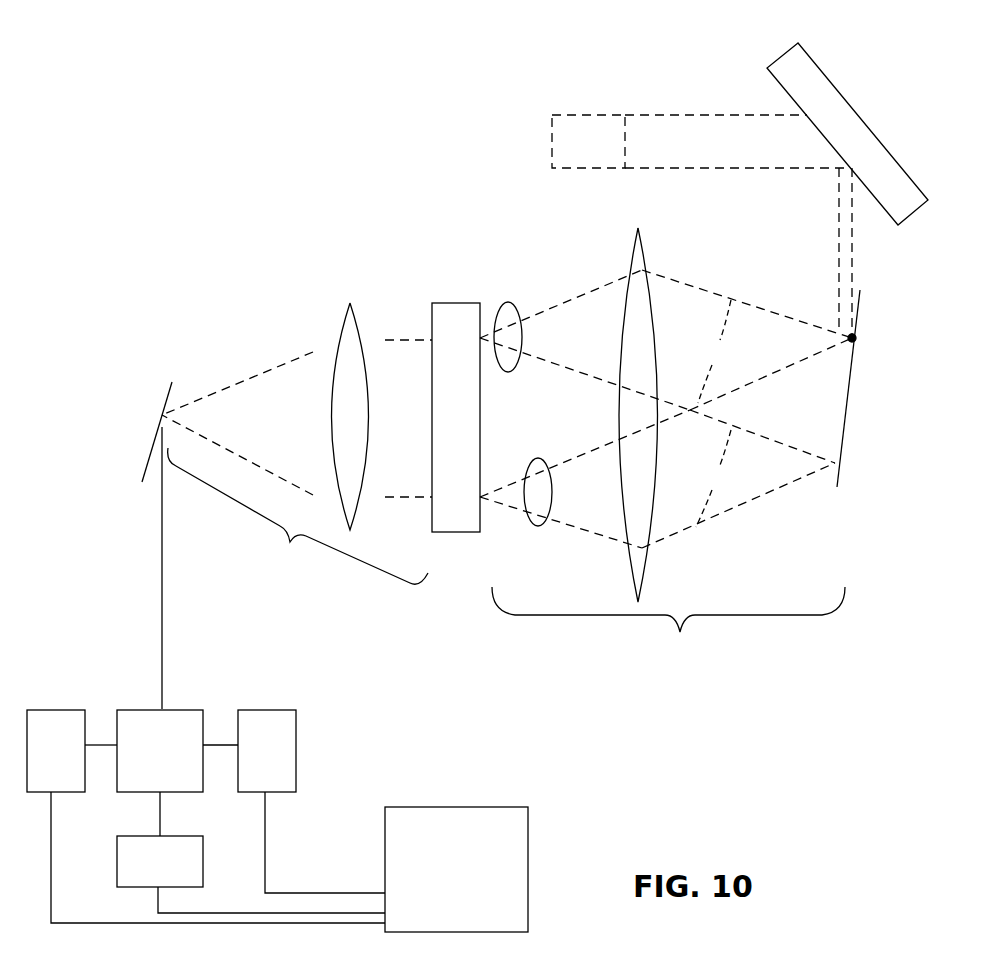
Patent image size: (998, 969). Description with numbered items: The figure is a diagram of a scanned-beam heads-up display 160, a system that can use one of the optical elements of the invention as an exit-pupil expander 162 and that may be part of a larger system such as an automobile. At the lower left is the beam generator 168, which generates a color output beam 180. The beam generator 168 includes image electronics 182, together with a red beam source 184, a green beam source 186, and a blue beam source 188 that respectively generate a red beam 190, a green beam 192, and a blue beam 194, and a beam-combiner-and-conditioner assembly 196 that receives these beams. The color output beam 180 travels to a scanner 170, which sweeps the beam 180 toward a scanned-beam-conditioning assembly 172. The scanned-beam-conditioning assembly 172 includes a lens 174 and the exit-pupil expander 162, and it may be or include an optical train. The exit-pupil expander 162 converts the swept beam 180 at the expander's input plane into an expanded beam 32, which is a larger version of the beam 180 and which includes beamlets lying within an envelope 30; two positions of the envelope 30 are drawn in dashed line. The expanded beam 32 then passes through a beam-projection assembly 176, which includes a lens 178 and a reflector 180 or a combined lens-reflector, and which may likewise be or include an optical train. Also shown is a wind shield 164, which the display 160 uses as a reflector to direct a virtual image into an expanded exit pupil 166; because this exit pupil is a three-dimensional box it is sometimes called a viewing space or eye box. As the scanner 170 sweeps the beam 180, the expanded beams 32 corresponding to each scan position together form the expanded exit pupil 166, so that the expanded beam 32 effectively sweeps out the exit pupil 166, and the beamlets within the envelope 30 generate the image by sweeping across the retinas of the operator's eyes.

The envelope 30 is at (713, 172).
The expanded beam 32 is at (685, 95).
The scanned-beam heads-up display 160 is at (670, 705).
The exit-pupil expander 162 is at (455, 303).
The wind shield 164 is at (907, 172).
The expanded exit pupil 166 is at (585, 112).
The beam generator 168 is at (335, 712).
The scanner 170 is at (155, 428).
The scanned-beam-conditioning assembly 172 is at (298, 516).
The lens 174 is at (345, 308).
The beam-projection assembly 176 is at (668, 626).
The lens 178 is at (625, 250).
The color output beam 180 is at (858, 300).
The image electronics 182 is at (452, 807).
The red beam source 184 is at (50, 709).
The green beam source 186 is at (117, 865).
The blue beam source 188 is at (276, 709).
The red beam 190 is at (98, 747).
The green beam 192 is at (160, 812).
The blue beam 194 is at (217, 745).
The beam-combiner-and-conditioner assembly 196 is at (133, 709).